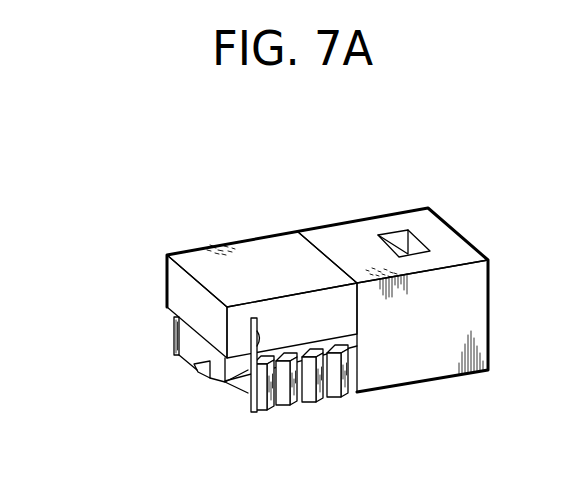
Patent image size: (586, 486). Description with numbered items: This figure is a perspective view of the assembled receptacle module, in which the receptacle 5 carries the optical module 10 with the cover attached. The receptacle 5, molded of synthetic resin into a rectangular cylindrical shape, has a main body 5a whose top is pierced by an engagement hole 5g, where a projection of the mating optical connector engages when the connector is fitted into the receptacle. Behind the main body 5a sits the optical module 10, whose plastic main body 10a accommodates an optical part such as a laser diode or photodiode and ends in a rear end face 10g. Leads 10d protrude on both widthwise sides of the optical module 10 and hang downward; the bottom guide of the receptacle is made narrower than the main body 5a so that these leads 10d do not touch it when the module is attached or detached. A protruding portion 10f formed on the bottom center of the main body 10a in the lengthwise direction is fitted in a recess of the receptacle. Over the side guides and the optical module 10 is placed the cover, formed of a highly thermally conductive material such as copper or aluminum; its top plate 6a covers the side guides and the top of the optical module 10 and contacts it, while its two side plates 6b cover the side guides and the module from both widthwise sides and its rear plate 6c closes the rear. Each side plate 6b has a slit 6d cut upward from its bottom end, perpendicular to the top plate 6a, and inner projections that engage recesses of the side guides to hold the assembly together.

The receptacle 5 is at (429, 250).
The main body 5a is at (463, 297).
The engagement hole 5g is at (412, 246).
The top plate 6a is at (267, 255).
The side plate 6b is at (340, 323).
The rear plate 6c is at (175, 281).
The slit 6d is at (257, 410).
The optical module 10 is at (212, 371).
The main body 10a is at (185, 332).
The leads 10d is at (315, 403).
The protruding portion 10f is at (200, 372).
The rear end face 10g is at (218, 368).